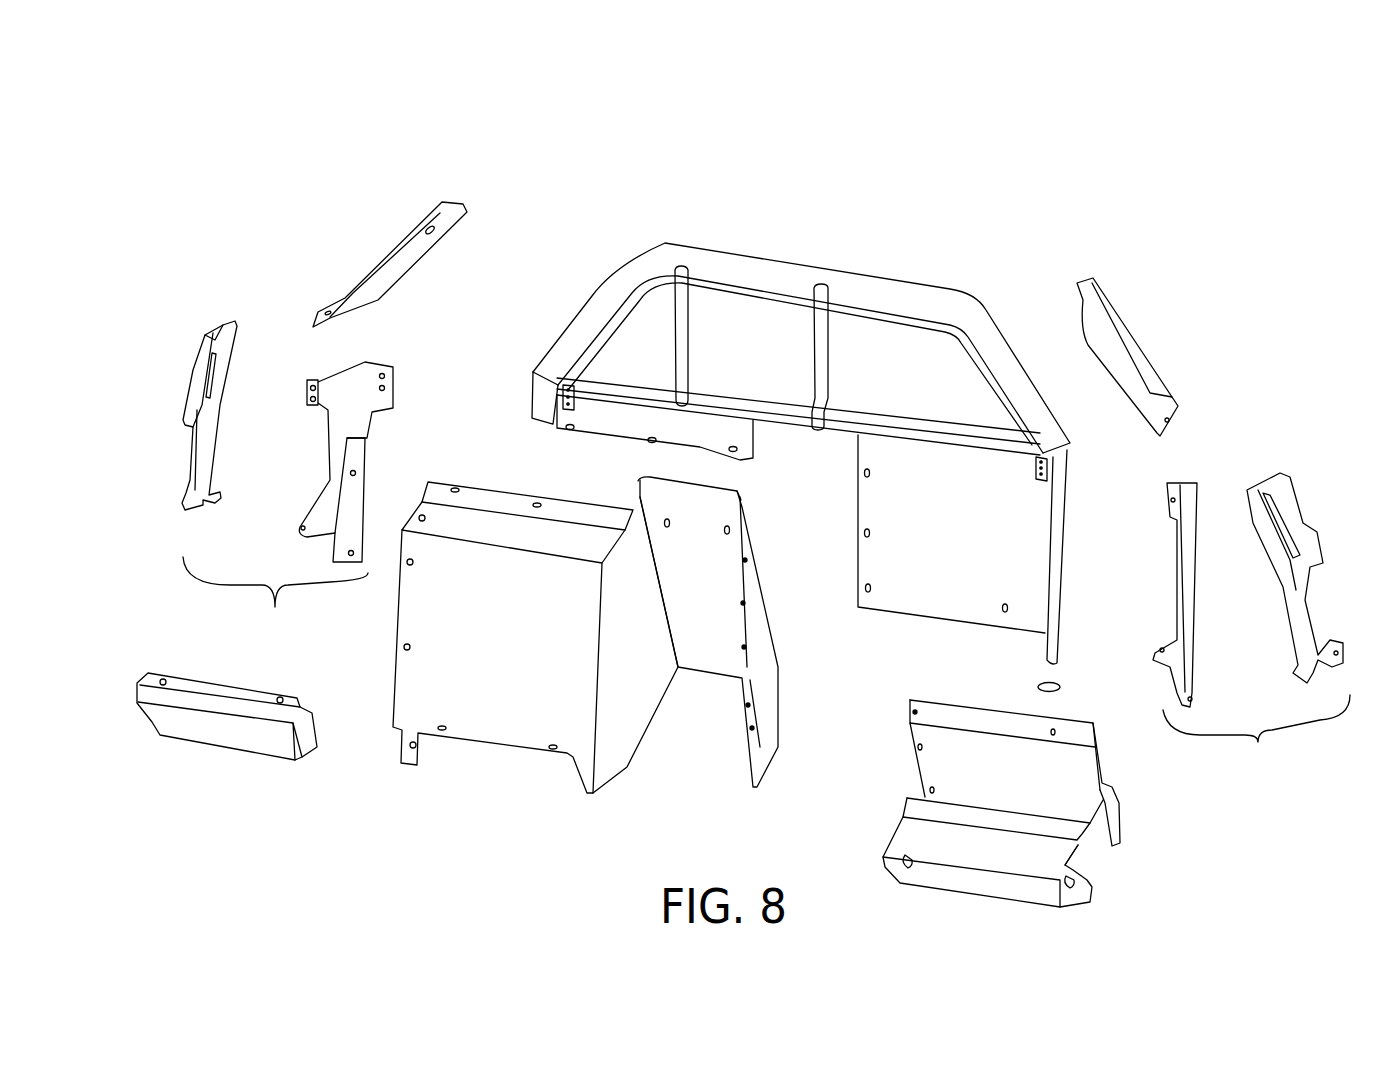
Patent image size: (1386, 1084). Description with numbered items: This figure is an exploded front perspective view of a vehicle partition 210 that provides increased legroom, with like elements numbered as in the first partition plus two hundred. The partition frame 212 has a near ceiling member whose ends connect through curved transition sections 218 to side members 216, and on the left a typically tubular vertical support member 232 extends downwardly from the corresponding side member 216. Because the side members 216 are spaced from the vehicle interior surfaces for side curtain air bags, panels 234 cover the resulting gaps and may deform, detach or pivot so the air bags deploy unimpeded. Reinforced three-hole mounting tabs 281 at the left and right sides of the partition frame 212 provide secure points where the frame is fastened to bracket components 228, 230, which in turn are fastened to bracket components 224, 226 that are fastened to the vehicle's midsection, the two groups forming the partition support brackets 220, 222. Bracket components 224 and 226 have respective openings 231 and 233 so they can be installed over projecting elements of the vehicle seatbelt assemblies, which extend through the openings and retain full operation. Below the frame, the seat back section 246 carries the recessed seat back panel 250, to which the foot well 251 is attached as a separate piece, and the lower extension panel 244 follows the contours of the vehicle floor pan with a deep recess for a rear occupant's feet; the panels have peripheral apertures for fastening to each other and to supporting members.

The partition 210 is at (1083, 205).
The partition frame 212 is at (857, 267).
The side member 216 is at (588, 313).
The transition section 218 is at (640, 253).
The partition support bracket 220 is at (1256, 737).
The partition support bracket 222 is at (275, 602).
The bracket component 224 is at (1317, 547).
The bracket component 226 is at (182, 400).
The bracket component 228 is at (1193, 600).
The bracket component 230 is at (330, 452).
The opening 231 is at (1273, 485).
The vertical support member 232 is at (1067, 527).
The opening 233 is at (208, 388).
The panel 234 is at (375, 258).
The lower extension panel 244 is at (1087, 762).
The seat back section 246 is at (780, 742).
The seat back panel 250 is at (397, 627).
The foot well 251 is at (220, 747).
The mounting tab 281 is at (577, 399).